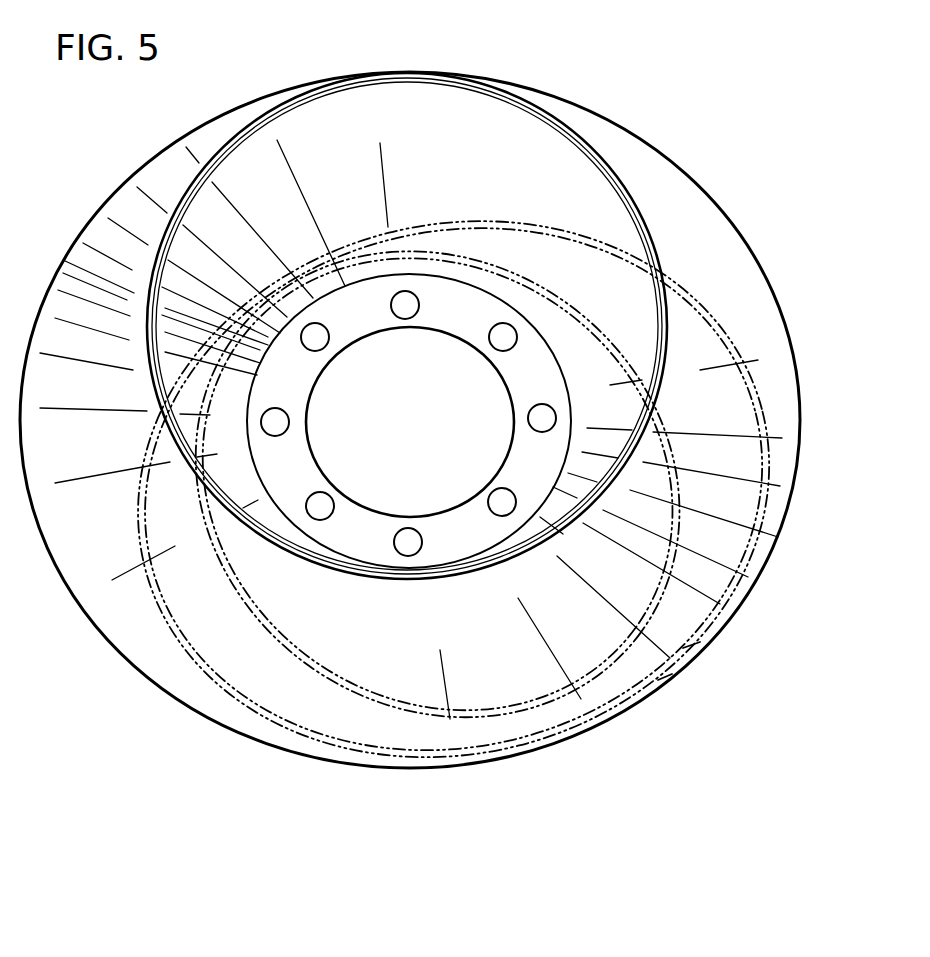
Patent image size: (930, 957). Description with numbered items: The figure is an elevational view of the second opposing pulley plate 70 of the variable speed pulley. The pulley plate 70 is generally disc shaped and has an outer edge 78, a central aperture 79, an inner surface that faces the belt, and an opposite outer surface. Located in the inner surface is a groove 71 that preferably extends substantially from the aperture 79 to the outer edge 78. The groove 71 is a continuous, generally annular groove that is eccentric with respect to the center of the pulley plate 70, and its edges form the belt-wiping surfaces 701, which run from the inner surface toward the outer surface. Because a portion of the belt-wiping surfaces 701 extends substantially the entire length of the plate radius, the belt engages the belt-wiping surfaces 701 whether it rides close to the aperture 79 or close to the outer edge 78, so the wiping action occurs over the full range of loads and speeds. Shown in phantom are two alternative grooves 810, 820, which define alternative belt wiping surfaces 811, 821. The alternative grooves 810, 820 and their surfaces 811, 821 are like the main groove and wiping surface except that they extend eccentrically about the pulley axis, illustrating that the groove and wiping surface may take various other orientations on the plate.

The pulley plate 70 is at (120, 727).
The groove 71 is at (658, 265).
The belt-wiping surface 701 is at (625, 186).
The outer edge 78 is at (60, 268).
The aperture 79 is at (424, 435).
The alternative groove 810 is at (264, 717).
The alternative belt wiping surface 811 is at (344, 755).
The alternative groove 820 is at (608, 696).
The alternative belt wiping surface 821 is at (683, 648).